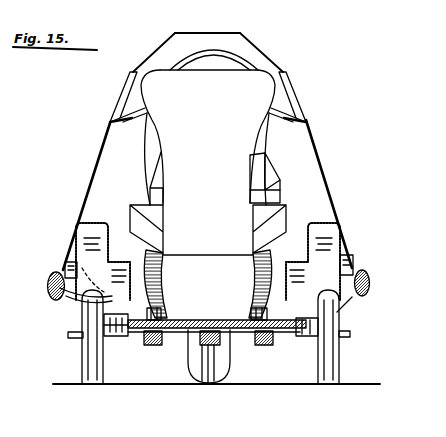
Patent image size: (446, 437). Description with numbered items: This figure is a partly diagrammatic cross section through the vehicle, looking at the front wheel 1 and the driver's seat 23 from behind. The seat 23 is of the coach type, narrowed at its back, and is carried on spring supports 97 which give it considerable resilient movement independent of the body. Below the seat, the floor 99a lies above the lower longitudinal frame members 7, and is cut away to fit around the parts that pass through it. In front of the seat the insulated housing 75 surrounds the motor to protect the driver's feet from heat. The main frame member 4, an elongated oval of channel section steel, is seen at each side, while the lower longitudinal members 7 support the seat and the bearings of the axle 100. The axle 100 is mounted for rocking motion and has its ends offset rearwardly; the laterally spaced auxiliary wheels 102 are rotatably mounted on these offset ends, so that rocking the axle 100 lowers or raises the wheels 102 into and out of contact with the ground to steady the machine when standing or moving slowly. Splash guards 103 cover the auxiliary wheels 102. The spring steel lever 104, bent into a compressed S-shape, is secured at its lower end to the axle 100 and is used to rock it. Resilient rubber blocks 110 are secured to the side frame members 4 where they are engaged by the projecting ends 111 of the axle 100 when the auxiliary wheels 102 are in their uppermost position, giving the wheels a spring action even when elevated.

The front wheel 1 is at (217, 373).
The horizontal oval member 4 is at (50, 277).
The longitudinal members 7 is at (138, 341).
The seat 23 is at (208, 126).
The insulated housing 75 is at (268, 164).
The spring supports 97 is at (153, 262).
The floor 99a is at (216, 318).
The axle 100 is at (233, 316).
The auxiliary wheels 102 is at (88, 357).
The splash guards 103 is at (88, 212).
The lever 104 is at (110, 297).
The rubber blocks 110 is at (67, 262).
The projecting ends 111 is at (82, 333).